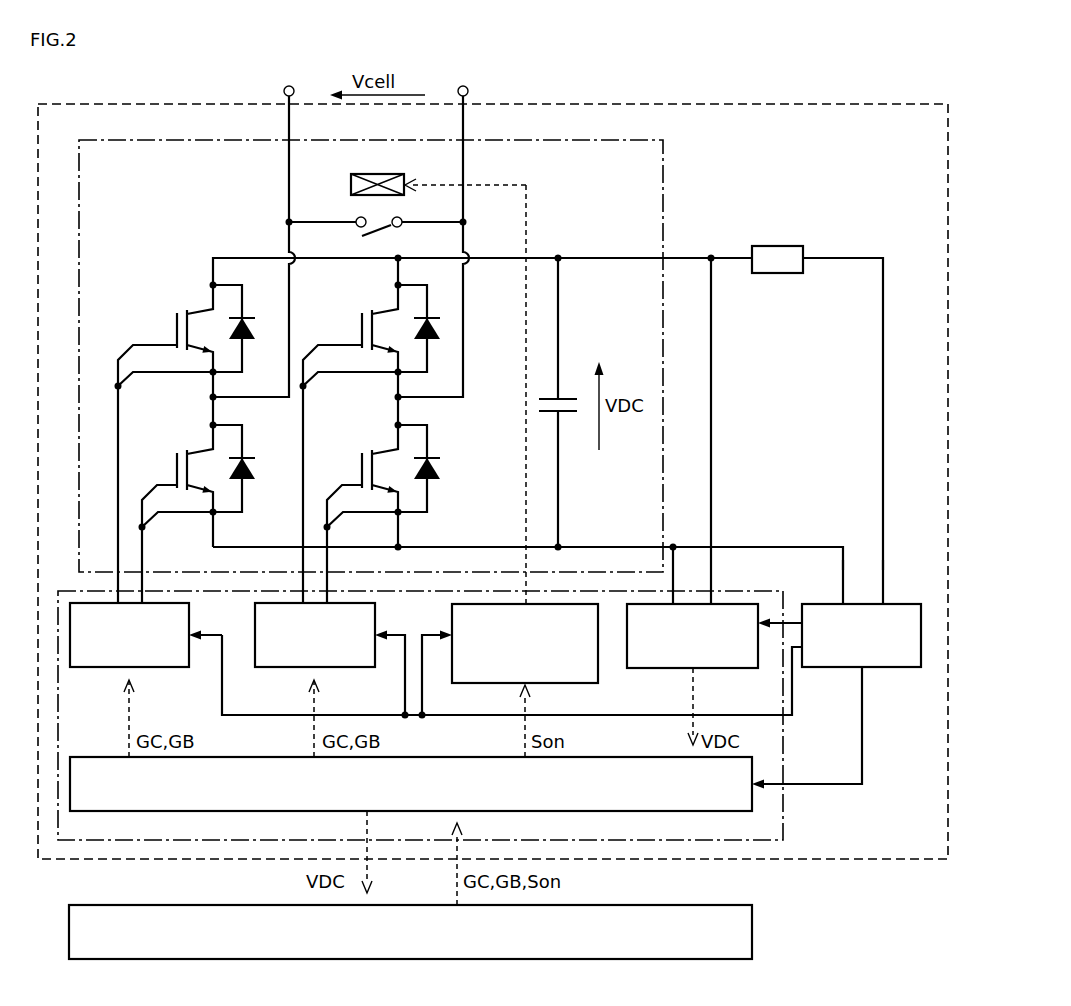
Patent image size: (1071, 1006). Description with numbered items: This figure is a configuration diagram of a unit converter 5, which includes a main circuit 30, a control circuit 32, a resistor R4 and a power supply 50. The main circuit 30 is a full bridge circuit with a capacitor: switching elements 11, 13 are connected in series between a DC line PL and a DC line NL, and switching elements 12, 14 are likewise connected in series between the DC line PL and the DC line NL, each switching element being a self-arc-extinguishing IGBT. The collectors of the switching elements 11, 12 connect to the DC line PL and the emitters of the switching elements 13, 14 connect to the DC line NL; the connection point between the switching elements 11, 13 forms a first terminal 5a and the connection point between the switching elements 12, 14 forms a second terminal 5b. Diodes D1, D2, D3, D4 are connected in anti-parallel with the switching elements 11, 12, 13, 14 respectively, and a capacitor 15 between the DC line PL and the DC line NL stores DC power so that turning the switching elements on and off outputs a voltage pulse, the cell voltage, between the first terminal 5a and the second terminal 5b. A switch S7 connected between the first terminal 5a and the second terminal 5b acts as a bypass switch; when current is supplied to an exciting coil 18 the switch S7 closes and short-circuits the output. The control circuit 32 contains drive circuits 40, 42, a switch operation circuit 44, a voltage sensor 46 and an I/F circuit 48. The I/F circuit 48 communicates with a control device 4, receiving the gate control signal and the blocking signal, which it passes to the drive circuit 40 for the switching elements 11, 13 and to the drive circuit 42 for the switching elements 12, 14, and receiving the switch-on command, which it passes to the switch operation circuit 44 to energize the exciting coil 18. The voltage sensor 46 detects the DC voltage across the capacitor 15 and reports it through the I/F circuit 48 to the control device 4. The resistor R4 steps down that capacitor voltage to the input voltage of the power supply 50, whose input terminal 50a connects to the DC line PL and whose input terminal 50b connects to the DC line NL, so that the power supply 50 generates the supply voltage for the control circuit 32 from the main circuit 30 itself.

The control device 4 is at (707, 959).
The unit converter 5 is at (897, 104).
The first terminal 5a is at (284, 86).
The second terminal 5b is at (468, 86).
The switching element 11 is at (166, 443).
The switching element 12 is at (351, 430).
The switching element 13 is at (178, 513).
The switching element 14 is at (363, 513).
The diode D1 is at (242, 328).
The diode D2 is at (427, 328).
The diode D3 is at (242, 468).
The diode D4 is at (427, 468).
The capacitor 15 is at (562, 402).
The exciting coil 18 is at (380, 173).
The switch S7 is at (385, 231).
The resistor R4 is at (777, 247).
The DC line PL is at (833, 258).
The DC line NL is at (775, 547).
The main circuit 30 is at (612, 140).
The control circuit 32 is at (783, 821).
The drive circuit 40 is at (152, 667).
The drive circuit 42 is at (337, 667).
The switch operation circuit 44 is at (547, 683).
The voltage sensor 46 is at (715, 668).
The interface (I/F) circuit 48 is at (705, 811).
The power supply 50 is at (883, 667).
The input terminal 50a is at (882, 602).
The input terminal 50b is at (842, 602).